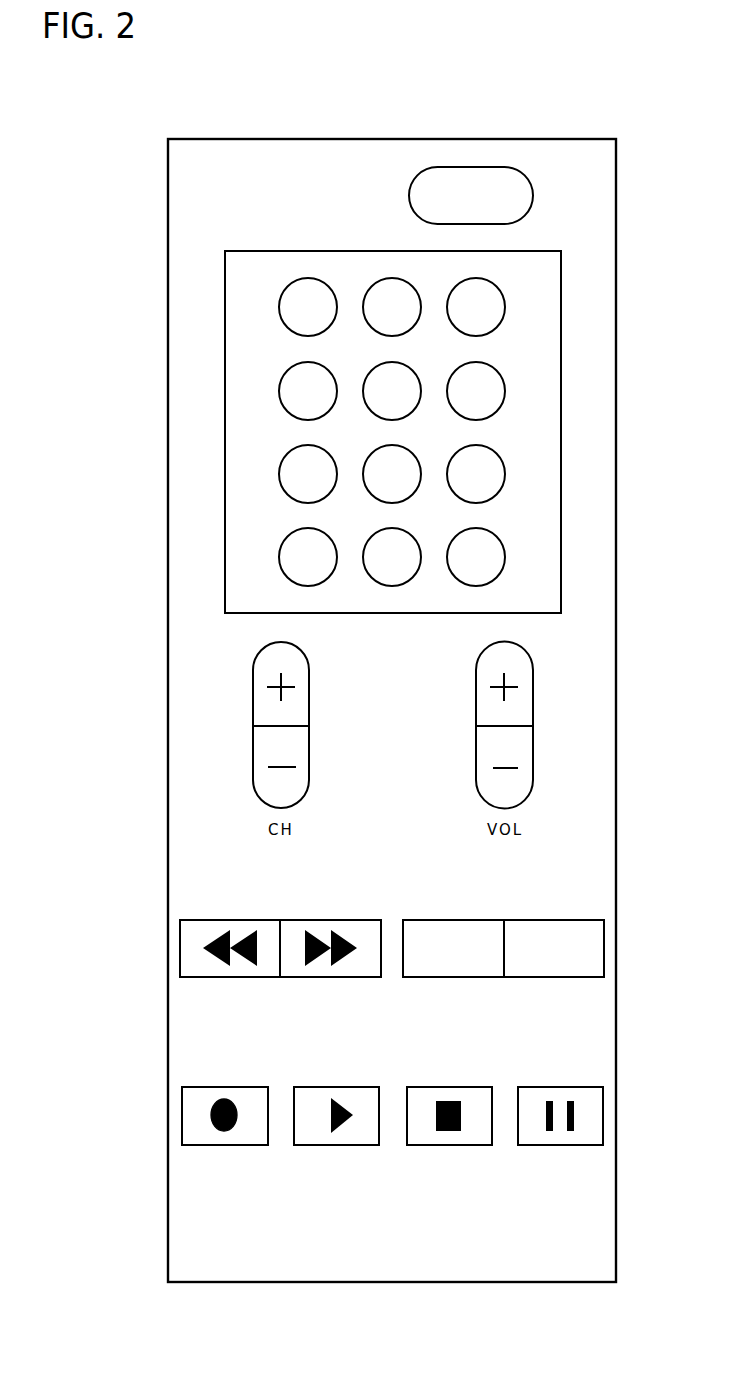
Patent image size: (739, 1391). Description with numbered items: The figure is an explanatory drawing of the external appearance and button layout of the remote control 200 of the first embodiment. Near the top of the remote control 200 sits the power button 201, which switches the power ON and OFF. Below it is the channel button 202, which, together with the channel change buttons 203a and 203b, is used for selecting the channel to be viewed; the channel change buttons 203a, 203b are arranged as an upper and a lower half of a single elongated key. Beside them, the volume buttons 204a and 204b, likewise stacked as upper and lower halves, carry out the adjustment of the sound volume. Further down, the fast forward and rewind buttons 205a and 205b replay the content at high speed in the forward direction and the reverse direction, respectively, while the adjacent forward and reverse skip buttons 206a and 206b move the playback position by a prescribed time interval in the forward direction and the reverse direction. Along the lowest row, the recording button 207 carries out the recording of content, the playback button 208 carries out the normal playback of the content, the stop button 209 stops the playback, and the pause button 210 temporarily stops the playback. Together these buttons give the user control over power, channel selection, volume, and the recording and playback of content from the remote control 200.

The remote control 200 is at (242, 139).
The power button 201 is at (507, 166).
The channel button 202 is at (553, 297).
The channel change button 203a is at (257, 675).
The channel change button 203b is at (258, 760).
The volume button 204a is at (530, 673).
The volume button 204b is at (526, 748).
The fast forward button 205a is at (321, 919).
The rewind button 205b is at (219, 919).
The forward skip button 206a is at (565, 919).
The reverse skip button 206b is at (466, 919).
The recording button 207 is at (211, 1086).
The playback button 208 is at (321, 1086).
The stop button 209 is at (465, 1086).
The pause button 210 is at (566, 1086).